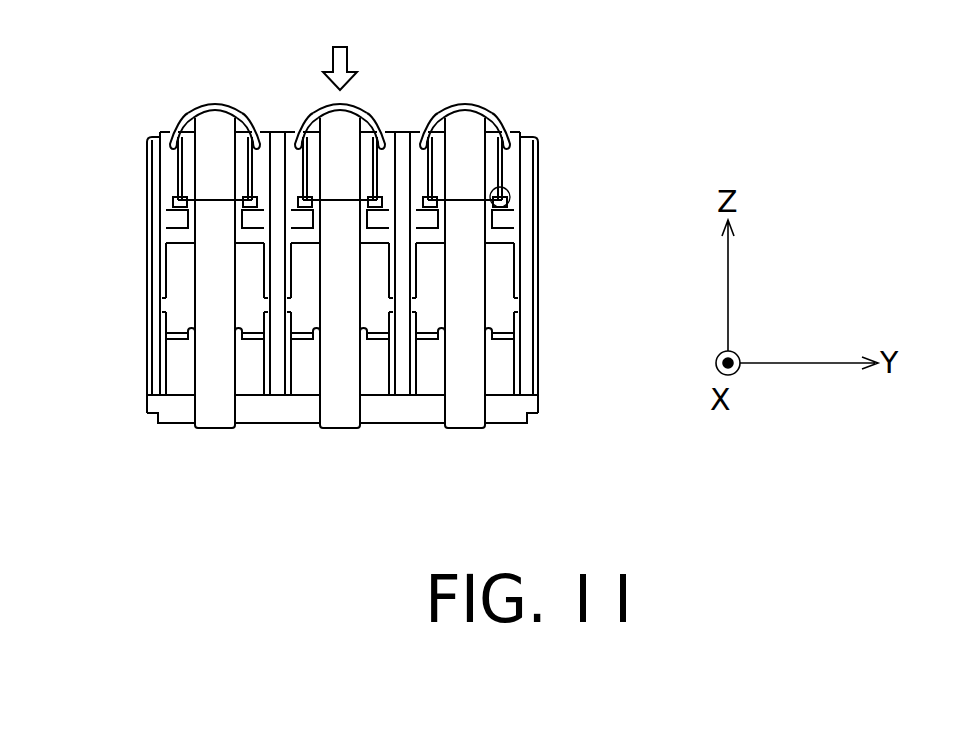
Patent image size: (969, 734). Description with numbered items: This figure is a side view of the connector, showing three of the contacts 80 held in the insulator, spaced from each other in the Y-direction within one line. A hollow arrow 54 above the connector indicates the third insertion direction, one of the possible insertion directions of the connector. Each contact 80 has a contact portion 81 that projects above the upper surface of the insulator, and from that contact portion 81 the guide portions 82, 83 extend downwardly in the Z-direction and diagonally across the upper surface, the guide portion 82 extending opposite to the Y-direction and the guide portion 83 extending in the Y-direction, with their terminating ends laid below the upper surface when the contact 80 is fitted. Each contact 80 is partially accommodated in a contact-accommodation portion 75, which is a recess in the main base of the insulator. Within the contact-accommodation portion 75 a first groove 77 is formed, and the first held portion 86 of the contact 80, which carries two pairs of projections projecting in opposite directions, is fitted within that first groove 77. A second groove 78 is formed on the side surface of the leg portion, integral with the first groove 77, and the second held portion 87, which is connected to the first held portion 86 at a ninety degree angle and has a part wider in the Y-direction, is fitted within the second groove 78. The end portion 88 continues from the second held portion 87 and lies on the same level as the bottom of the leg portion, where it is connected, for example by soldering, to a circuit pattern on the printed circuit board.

The contact 80 is at (151, 237).
The contact portion 81 is at (215, 72).
The guide portion 82 is at (155, 101).
The guide portion 83 is at (269, 96).
The hollow arrow 54 is at (347, 63).
The contact-accommodation portion 75 is at (504, 256).
The first held portion 86 is at (521, 166).
The first groove 77 is at (552, 204).
The second groove 78 is at (549, 302).
The second held portion 87 is at (529, 256).
The end portion 88 is at (507, 440).